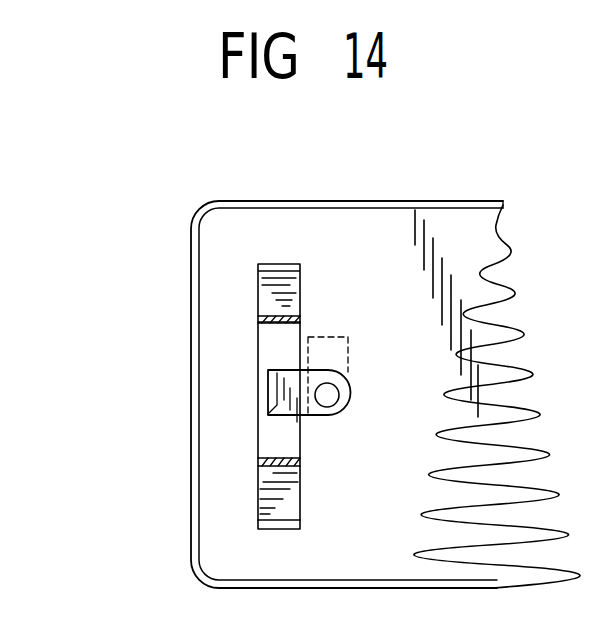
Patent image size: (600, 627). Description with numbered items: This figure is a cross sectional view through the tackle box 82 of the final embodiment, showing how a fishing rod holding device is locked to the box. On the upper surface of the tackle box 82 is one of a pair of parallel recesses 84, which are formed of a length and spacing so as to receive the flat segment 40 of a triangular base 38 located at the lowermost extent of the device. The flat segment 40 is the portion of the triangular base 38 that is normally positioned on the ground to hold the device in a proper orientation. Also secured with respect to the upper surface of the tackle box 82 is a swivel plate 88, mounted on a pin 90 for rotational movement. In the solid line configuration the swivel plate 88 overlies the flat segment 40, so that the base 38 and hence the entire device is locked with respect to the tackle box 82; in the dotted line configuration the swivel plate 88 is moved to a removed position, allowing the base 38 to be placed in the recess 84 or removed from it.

The triangular base 38 is at (280, 264).
The flat segment 40 is at (273, 356).
The tackle box 82 is at (472, 230).
The parallel recesses 84 is at (301, 340).
The swivel plate 88 is at (272, 414).
The pin 90 is at (330, 395).